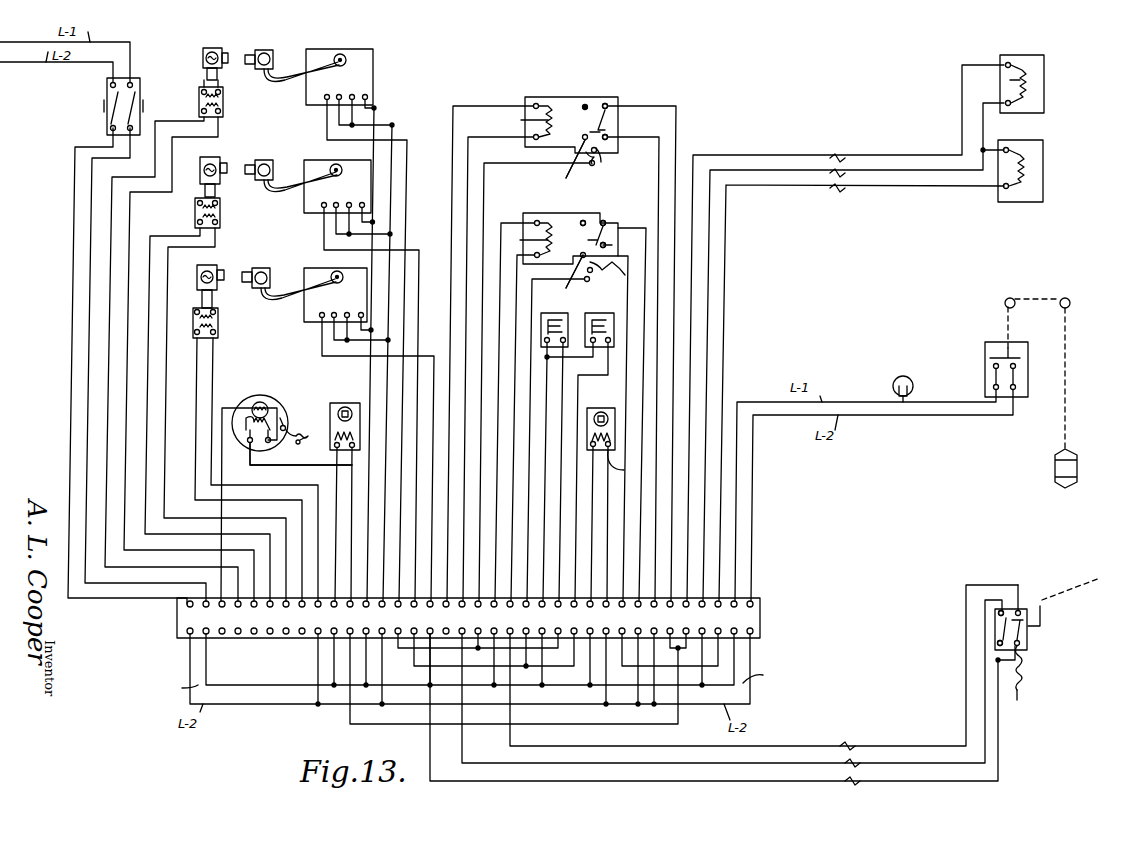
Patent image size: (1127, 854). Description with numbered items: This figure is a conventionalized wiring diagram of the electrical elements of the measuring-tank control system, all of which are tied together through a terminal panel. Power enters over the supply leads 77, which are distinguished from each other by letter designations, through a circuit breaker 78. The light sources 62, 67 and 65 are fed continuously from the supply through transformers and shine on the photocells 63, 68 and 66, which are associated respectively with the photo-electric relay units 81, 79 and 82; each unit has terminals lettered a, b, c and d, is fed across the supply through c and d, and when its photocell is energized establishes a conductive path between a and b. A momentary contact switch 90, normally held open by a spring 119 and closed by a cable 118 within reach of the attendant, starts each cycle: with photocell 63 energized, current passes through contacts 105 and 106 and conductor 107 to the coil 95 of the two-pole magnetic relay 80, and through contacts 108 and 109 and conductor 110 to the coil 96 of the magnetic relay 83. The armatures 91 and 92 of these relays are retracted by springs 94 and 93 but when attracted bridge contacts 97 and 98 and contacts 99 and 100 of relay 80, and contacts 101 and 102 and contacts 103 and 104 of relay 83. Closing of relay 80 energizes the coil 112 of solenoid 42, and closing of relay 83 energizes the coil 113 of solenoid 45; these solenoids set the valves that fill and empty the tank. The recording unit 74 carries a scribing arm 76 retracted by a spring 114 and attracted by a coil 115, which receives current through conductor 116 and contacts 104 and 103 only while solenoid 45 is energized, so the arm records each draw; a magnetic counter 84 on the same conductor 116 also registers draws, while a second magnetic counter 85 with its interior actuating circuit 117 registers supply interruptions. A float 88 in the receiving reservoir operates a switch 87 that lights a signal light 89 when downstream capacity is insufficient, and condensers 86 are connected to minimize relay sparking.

The solenoid 42 is at (1043, 170).
The solenoid 45 is at (1044, 83).
The light source 62 is at (201, 268).
The photocell 63 is at (264, 264).
The light source 65 is at (203, 56).
The photocell 66 is at (262, 50).
The light source 67 is at (204, 160).
The photocell 68 is at (264, 160).
The recording unit 74 is at (263, 413).
The scribing arm 76 is at (292, 424).
The leads 77 is at (88, 350).
The circuit breaker 78 is at (106, 106).
The photo-electric relay unit 79 is at (337, 186).
The magnetic relay 80 is at (558, 218).
The photo-electric relay unit 81 is at (335, 295).
The photo-electric relay unit 82 is at (339, 77).
The magnetic relay 83 is at (575, 92).
The magnetic counter 84 is at (342, 403).
The magnetic counter 85 is at (600, 408).
The condensers 86 is at (594, 310).
The switch 87 is at (990, 362).
The float 88 is at (1055, 473).
The signal light 89 is at (893, 388).
The switch 90 is at (1027, 645).
The armature 91 is at (612, 234).
The armature 92 is at (610, 130).
The spring 93 is at (596, 168).
The spring 94 is at (610, 246).
The coil 95 is at (545, 230).
The coil 96 is at (523, 120).
The contact 97 is at (570, 284).
The contact 98 is at (585, 220).
The contact 99 is at (620, 278).
The contact 100 is at (602, 220).
The contact 101 is at (566, 170).
The contact 102 is at (587, 105).
The contact 103 is at (599, 154).
The contact 104 is at (610, 104).
The contact 105 is at (1024, 650).
The contact 106 is at (1020, 608).
The conductor 107 is at (902, 746).
The contact 108 is at (997, 643).
The contact 109 is at (998, 613).
The conductor 110 is at (812, 746).
The coil 112 is at (1030, 178).
The coil 113 is at (1008, 80).
The spring 114 is at (301, 454).
The coil 115 is at (238, 440).
The conductor 116 is at (402, 724).
The interior actuating circuit 117 is at (631, 465).
The cable 118 is at (1075, 602).
The spring 119 is at (1022, 695).